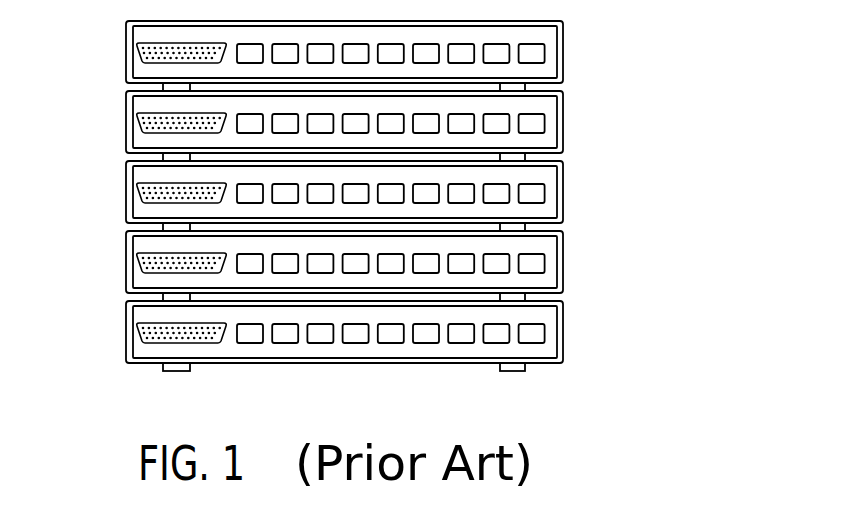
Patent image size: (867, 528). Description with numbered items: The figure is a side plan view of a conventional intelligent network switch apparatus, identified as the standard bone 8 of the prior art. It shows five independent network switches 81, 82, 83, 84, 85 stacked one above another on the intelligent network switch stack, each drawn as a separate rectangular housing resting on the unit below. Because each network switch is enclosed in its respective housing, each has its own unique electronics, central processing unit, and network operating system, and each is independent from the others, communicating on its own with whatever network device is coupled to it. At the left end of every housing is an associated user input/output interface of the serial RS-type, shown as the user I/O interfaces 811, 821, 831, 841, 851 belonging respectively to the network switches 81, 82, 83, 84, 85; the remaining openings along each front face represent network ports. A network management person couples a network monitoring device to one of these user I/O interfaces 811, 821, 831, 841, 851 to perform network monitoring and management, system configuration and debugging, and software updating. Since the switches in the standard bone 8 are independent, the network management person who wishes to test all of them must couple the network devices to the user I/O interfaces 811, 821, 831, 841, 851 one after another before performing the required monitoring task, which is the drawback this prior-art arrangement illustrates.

The standard bone 8 is at (394, 192).
The network switch 81 is at (548, 41).
The network switch 82 is at (548, 111).
The network switch 83 is at (548, 181).
The network switch 84 is at (548, 251).
The network switch 85 is at (548, 321).
The user input/output interface 811 is at (140, 46).
The user input/output interface 821 is at (140, 116).
The user input/output interface 831 is at (140, 186).
The user input/output interface 841 is at (140, 256).
The user input/output interface 851 is at (140, 326).